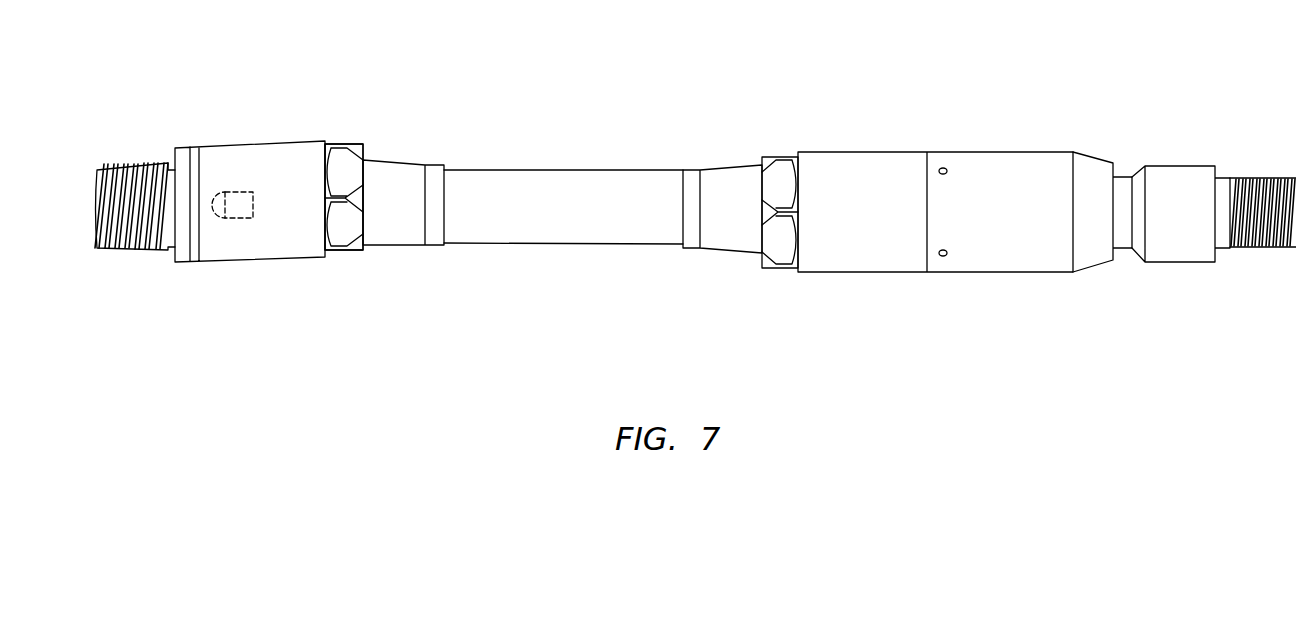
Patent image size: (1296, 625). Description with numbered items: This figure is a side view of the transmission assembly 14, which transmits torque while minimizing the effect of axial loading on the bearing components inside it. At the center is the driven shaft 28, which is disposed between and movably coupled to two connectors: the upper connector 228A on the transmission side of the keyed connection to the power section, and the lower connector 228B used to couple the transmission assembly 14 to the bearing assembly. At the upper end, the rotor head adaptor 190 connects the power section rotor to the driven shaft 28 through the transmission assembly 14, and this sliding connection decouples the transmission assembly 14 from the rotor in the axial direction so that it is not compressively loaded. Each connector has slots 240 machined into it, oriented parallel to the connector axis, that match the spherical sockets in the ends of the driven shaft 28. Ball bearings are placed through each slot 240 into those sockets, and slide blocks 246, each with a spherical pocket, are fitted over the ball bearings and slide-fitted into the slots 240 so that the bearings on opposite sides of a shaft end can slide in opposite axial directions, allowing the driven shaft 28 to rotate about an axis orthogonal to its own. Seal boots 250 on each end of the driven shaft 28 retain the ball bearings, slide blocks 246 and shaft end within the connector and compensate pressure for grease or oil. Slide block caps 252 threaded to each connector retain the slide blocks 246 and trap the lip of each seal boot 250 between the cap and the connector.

The transmission assembly 14 is at (160, 74).
The driven shaft 28 is at (535, 188).
The rotor head adaptor 190 is at (1177, 177).
The upper connector 228A is at (1007, 272).
The lower connector 228B is at (123, 250).
The slot 240 is at (221, 218).
The slide block 246 is at (240, 218).
The seal boot 250 is at (408, 245).
The slide block cap 252 is at (278, 142).